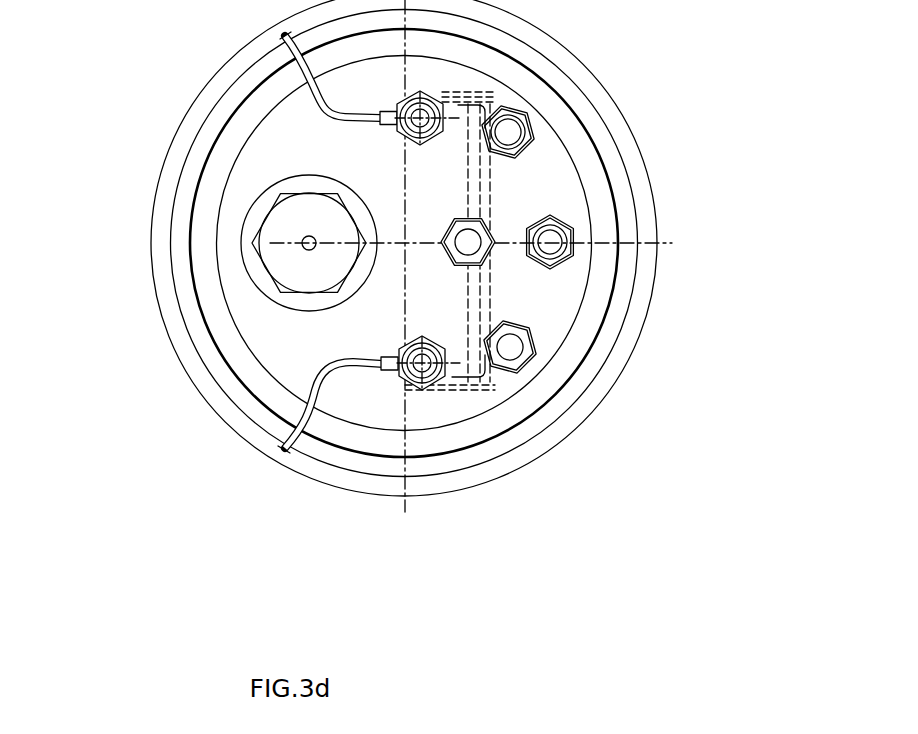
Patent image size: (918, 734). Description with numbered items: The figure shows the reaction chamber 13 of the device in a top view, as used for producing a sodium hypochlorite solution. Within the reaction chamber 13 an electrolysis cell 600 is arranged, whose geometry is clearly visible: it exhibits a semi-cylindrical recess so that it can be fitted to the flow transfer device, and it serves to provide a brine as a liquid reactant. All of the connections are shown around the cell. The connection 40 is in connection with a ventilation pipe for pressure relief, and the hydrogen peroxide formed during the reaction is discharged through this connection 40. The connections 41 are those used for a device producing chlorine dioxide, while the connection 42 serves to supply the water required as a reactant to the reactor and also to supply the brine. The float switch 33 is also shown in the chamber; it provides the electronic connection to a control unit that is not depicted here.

The reaction chamber 13 is at (303, 155).
The float switch 33 is at (292, 232).
The connection 40 is at (469, 264).
The connections 41 is at (562, 226).
The connection 42 is at (510, 130).
The electrolysis cell 600 is at (505, 300).